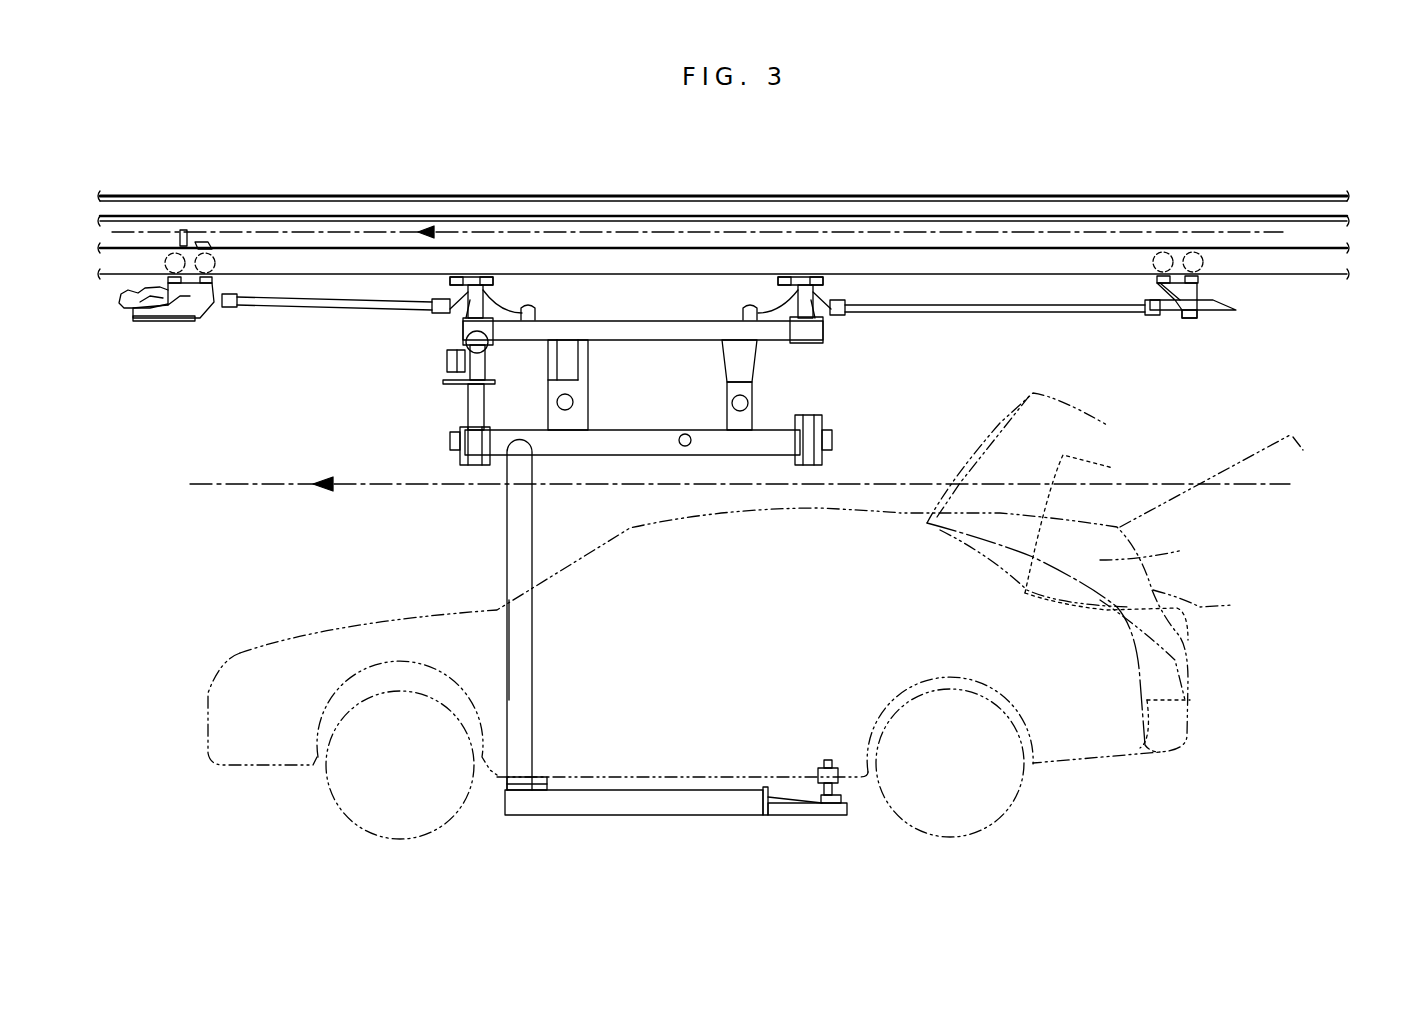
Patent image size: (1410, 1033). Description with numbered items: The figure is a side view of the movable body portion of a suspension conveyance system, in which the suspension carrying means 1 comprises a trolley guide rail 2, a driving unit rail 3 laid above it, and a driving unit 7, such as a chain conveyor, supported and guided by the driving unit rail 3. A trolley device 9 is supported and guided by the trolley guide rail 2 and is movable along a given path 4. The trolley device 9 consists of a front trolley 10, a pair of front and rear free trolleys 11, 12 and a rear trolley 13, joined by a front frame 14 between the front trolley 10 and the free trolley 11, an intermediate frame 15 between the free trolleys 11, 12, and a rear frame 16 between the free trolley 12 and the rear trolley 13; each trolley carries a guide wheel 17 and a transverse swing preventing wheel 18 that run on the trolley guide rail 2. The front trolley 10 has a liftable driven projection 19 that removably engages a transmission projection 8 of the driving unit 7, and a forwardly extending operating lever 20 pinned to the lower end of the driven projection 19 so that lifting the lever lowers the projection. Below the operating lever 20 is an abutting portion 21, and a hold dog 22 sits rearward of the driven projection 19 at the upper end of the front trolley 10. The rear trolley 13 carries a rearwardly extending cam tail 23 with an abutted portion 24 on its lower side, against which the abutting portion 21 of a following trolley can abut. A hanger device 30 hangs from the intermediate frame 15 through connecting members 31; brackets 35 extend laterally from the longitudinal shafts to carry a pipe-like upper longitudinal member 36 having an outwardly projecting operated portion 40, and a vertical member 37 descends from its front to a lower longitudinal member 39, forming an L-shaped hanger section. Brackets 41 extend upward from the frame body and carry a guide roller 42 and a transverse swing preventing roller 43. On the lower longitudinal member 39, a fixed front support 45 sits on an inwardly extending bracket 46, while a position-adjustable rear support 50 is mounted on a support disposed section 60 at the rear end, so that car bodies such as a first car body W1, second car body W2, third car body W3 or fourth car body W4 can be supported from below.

The suspension carrying means 1 is at (1302, 186).
The trolley guide rail 2 is at (1327, 262).
The driving unit rail 3 is at (1210, 207).
The given path 4 is at (277, 486).
The driving unit 7 is at (325, 228).
The transmission projection 8 is at (172, 247).
The trolley device 9 is at (836, 328).
The front trolley 10 is at (193, 303).
The front free trolley 11 is at (470, 287).
The rear free trolley 12 is at (800, 287).
The rear trolley 13 is at (1180, 302).
The front frame 14 is at (310, 297).
The intermediate frame 15 is at (633, 330).
The rear frame 16 is at (1020, 310).
The guide wheel 17 is at (213, 262).
The transverse swing preventing wheel 18 is at (823, 280).
The driven projection 19 is at (178, 247).
The operating lever 20 is at (128, 295).
The abutting portion 21 is at (147, 320).
The hold dog 22 is at (200, 243).
The cam tail 23 is at (1222, 301).
The abutted portion 24 is at (1200, 315).
The hanger device 30 is at (500, 509).
The connecting member 31 is at (588, 390).
The bracket 35 is at (450, 438).
The upper longitudinal member 36 is at (580, 448).
The vertical member 37 is at (522, 657).
The lower longitudinal member 39 is at (660, 803).
The operated portion 40 is at (684, 434).
The bracket 41 is at (473, 400).
The guide roller 42 is at (466, 340).
The transverse swing preventing roller 43 is at (447, 360).
The front support 45 is at (540, 780).
The bracket 46 is at (543, 793).
The rear support 50 is at (812, 758).
The support disposed section 60 is at (790, 818).
The first car body W1 is at (1222, 658).
The second car body W2 is at (1190, 704).
The third car body W3 is at (1143, 562).
The fourth car body W4 is at (1200, 606).